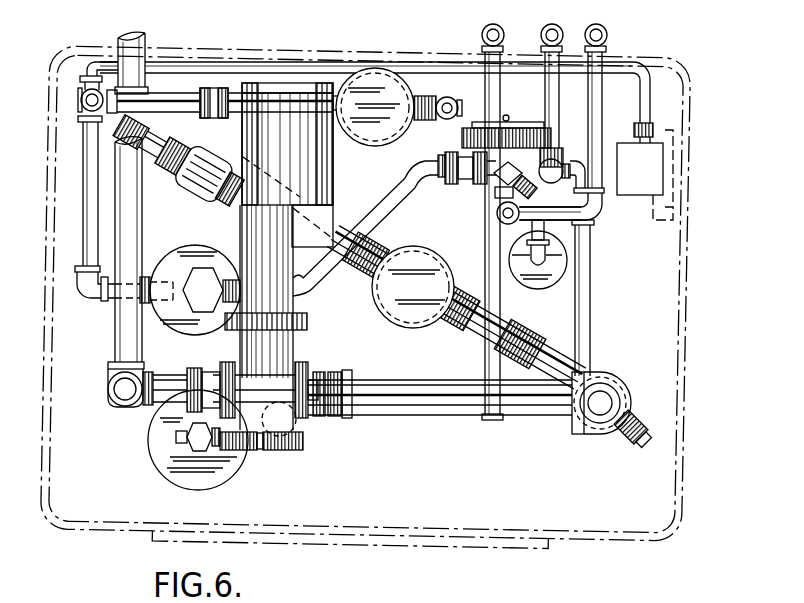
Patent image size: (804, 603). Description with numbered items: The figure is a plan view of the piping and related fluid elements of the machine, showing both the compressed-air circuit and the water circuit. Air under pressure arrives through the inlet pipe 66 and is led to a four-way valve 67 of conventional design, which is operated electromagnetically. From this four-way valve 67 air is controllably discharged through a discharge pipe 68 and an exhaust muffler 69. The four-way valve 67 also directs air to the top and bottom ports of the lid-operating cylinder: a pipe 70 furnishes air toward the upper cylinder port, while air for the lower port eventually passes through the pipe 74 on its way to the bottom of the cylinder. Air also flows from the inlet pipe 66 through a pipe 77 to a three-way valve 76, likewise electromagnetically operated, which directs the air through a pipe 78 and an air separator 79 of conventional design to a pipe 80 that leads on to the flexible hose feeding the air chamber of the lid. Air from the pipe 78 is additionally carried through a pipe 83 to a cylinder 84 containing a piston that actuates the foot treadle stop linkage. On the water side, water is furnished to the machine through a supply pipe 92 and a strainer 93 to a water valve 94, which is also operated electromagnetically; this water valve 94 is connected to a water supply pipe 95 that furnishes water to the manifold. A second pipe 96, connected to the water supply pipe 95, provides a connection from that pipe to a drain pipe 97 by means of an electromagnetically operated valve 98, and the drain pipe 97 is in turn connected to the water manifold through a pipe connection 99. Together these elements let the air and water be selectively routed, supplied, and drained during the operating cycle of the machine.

The pipe 66 is at (606, 44).
The four-way valve 67 is at (524, 127).
The discharge pipe 68 is at (542, 233).
The exhaust muffler 69 is at (548, 284).
The pipe 70 is at (553, 124).
The pipe 74 is at (484, 38).
The three-way valve 76 is at (181, 248).
The pipe 77 is at (370, 207).
The pipe 78 is at (80, 158).
The air separator 79 is at (380, 82).
The pipe 80 is at (456, 112).
The pipe 83 is at (295, 63).
The cylinder 84 is at (670, 226).
The supply pipe 92 is at (127, 36).
The strainer 93 is at (202, 182).
The water valve 94 is at (418, 255).
The water supply pipe 95 is at (548, 350).
The second pipe 96 is at (419, 416).
The drain pipe 97 is at (138, 222).
The electromagnetically operated valve 98 is at (278, 452).
The pipe connection 99 is at (115, 405).